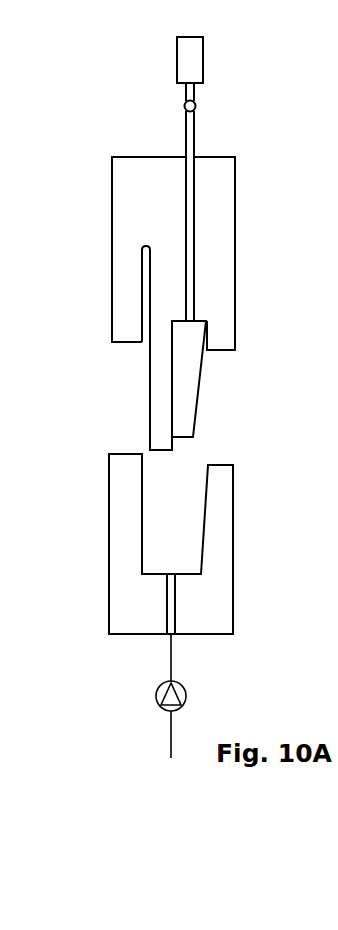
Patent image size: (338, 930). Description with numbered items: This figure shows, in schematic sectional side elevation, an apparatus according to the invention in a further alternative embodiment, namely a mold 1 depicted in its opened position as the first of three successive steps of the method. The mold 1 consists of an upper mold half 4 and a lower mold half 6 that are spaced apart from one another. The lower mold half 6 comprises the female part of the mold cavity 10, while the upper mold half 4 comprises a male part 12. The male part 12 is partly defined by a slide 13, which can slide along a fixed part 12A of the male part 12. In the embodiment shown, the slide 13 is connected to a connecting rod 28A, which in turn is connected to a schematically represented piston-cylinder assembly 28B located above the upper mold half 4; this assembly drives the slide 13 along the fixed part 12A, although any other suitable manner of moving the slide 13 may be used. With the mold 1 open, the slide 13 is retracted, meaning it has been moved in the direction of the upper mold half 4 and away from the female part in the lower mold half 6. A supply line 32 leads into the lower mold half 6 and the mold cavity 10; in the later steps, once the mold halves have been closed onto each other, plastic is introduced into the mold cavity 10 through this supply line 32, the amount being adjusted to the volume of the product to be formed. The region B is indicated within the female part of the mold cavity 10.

The mold 1 is at (244, 129).
The upper mold half 4 is at (214, 202).
The lower mold half 6 is at (215, 532).
The mold cavity 10 is at (194, 464).
The male part 12 is at (141, 388).
The fixed part 12A is at (162, 418).
The slide 13 is at (188, 372).
The connecting rod 28A is at (186, 125).
The piston-cylinder assembly 28B is at (177, 60).
The supply line 32 is at (171, 660).
The cavity region B is at (165, 527).